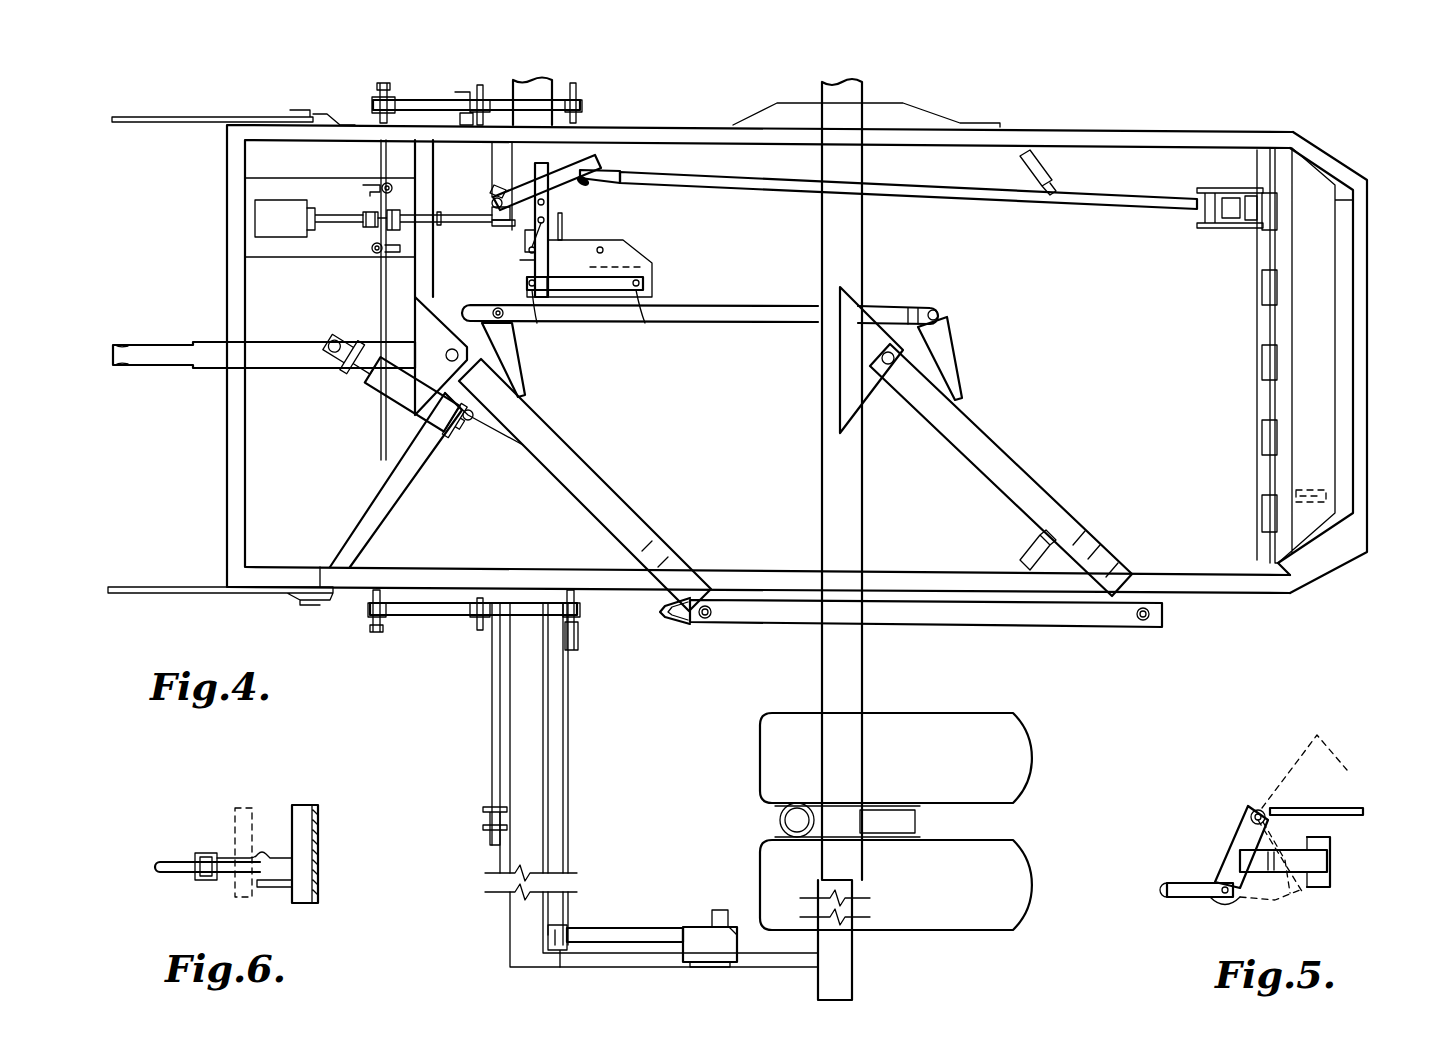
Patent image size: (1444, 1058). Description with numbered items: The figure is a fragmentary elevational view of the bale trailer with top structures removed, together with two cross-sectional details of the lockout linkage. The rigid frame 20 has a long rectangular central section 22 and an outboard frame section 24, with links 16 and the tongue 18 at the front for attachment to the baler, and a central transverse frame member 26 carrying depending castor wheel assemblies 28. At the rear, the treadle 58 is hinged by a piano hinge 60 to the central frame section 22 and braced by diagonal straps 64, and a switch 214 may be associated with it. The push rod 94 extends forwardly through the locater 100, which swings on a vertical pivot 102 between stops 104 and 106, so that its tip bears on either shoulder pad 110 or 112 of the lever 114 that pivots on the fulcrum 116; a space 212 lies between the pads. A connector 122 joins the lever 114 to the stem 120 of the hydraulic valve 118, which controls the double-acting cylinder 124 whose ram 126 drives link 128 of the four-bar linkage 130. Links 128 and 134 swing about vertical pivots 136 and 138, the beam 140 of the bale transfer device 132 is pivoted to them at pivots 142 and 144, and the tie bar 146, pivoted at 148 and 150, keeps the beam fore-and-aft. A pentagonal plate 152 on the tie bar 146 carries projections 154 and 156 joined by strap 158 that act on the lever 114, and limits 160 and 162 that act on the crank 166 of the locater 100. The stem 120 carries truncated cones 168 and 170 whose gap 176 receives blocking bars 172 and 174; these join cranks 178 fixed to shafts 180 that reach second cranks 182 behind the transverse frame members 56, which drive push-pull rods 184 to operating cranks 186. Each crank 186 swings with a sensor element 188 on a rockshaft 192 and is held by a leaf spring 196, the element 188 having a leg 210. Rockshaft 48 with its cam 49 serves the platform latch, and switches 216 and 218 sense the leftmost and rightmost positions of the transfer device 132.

In FIG. 4, the links 16 is at (160, 125).
In FIG. 4, the tongue 18 is at (147, 344).
In FIG. 4, the frame 20 is at (340, 602).
In FIG. 4, the central frame section 22 is at (227, 418).
In FIG. 4, the outboard frame section 24 is at (490, 860).
In FIG. 5, the outboard frame section 24 is at (1333, 883).
In FIG. 6, the outboard frame section 24 is at (322, 880).
In FIG. 4, the central transverse frame member 26 is at (820, 455).
In FIG. 4, the castor wheel assemblies 28 is at (758, 800).
In FIG. 4, the rockshaft 48 is at (490, 712).
In FIG. 4, the cam 49 is at (510, 820).
In FIG. 4, the transverse frame member 56 is at (555, 94).
In FIG. 4, the treadle 58 is at (1368, 380).
In FIG. 4, the piano hinge 60 is at (1262, 378).
In FIG. 4, the straps 64 is at (1233, 175).
In FIG. 4, the push rod 94 is at (930, 192).
In FIG. 4, the locater 100 is at (622, 176).
In FIG. 4, the vertical pivot 102 is at (492, 203).
In FIG. 4, the stop 104 is at (495, 188).
In FIG. 4, the stop 106 is at (500, 227).
In FIG. 4, the shoulder pad 110 is at (550, 232).
In FIG. 4, the shoulder pad 112 is at (563, 178).
In FIG. 4, the lever 114 is at (549, 265).
In FIG. 4, the fulcrum 116 is at (588, 185).
In FIG. 4, the hydraulic valve 118 is at (276, 198).
In FIG. 4, the stem 120 is at (492, 222).
In FIG. 4, the connector 122 is at (530, 253).
In FIG. 4, the double-acting cylinder 124 is at (432, 498).
In FIG. 4, the ram 126 is at (471, 422).
In FIG. 4, the link 128 is at (578, 470).
In FIG. 4, the four-bar linkage 130 is at (1005, 422).
In FIG. 4, the bale transfer device 132 is at (1044, 630).
In FIG. 4, the link 134 is at (1050, 497).
In FIG. 4, the vertical pivot 136 is at (446, 360).
In FIG. 4, the vertical pivot 138 is at (887, 366).
In FIG. 4, the beam 140 is at (940, 622).
In FIG. 4, the pivot 142 is at (705, 622).
In FIG. 4, the pivot 144 is at (1150, 614).
In FIG. 4, the tie bar 146 is at (748, 326).
In FIG. 4, the pivot 148 is at (522, 372).
In FIG. 4, the pivot 150 is at (938, 311).
In FIG. 4, the pentagonal plate 152 is at (652, 291).
In FIG. 4, the projection 154 is at (646, 325).
In FIG. 4, the projection 156 is at (530, 323).
In FIG. 4, the strap 158 is at (600, 326).
In FIG. 4, the limit 160 is at (608, 250).
In FIG. 4, the limit 162 is at (526, 284).
In FIG. 4, the crank 166 is at (528, 235).
In FIG. 4, the truncated cone 168 is at (368, 210).
In FIG. 4, the truncated cone 170 is at (378, 254).
In FIG. 4, the blocking bar 172 is at (380, 317).
In FIG. 4, the blocking bar 174 is at (383, 184).
In FIG. 4, the gap 176 is at (386, 224).
In FIG. 4, the crank 178 is at (378, 96).
In FIG. 4, the shaft 180 is at (412, 107).
In FIG. 4, the crank 182 is at (577, 630).
In FIG. 4, the push-pull rod 184 is at (571, 712).
In FIG. 5, the push-pull rod 184 is at (1190, 890).
In FIG. 6, the push-pull rod 184 is at (163, 864).
In FIG. 4, the operating crank 186 is at (578, 952).
In FIG. 5, the operating crank 186 is at (1242, 900).
In FIG. 6, the operating crank 186 is at (200, 880).
In FIG. 4, the sensor element 188 is at (688, 966).
In FIG. 5, the sensor element 188 is at (1343, 805).
In FIG. 4, the rockshaft 192 is at (628, 927).
In FIG. 5, the rockshaft 192 is at (1256, 806).
In FIG. 6, the rockshaft 192 is at (232, 822).
In FIG. 5, the leaf spring 196 is at (1328, 862).
In FIG. 6, the leaf spring 196 is at (266, 855).
In FIG. 4, the leg 210 is at (720, 908).
In FIG. 4, the space 212 is at (602, 252).
In FIG. 4, the switch 214 is at (1330, 497).
In FIG. 4, the second switch 216 is at (1024, 546).
In FIG. 4, the third switch 218 is at (1022, 173).